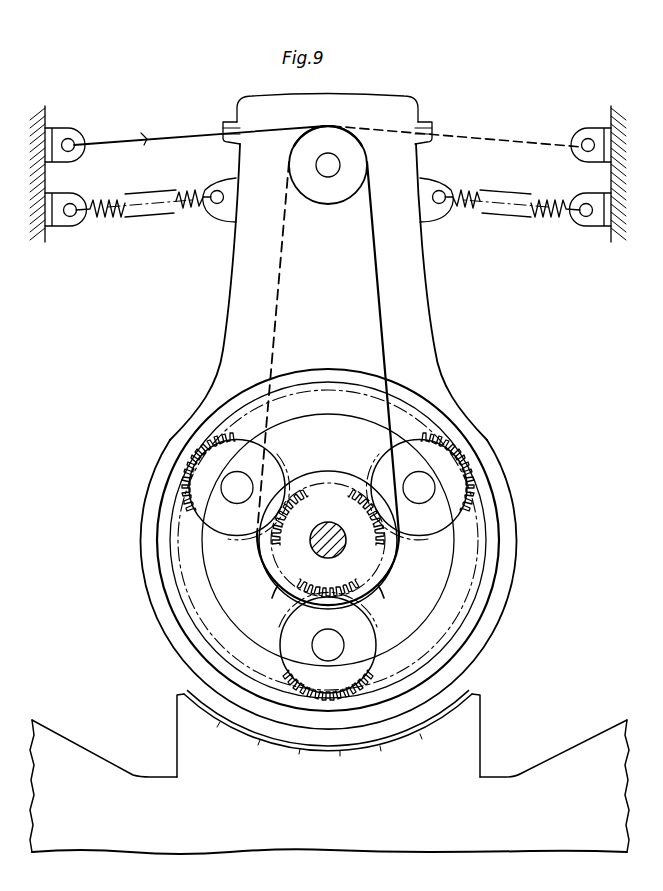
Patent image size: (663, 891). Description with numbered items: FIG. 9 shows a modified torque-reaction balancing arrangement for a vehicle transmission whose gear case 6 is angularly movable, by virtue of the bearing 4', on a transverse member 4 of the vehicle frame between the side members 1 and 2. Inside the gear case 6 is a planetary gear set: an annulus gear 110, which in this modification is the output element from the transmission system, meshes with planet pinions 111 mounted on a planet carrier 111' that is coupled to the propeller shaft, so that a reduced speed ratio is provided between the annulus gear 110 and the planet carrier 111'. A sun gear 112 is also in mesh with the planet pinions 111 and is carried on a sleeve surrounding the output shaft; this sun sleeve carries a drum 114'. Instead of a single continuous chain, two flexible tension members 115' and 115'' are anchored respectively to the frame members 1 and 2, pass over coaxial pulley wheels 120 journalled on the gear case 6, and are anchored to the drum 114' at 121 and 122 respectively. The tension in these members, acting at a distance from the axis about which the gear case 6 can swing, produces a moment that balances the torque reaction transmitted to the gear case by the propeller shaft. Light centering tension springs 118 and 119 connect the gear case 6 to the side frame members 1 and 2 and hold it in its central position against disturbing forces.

The side member 1 is at (613, 177).
The side member 2 is at (46, 177).
The transverse member 4 is at (329, 799).
The bearing 4' is at (328, 734).
The gear case 6 is at (415, 282).
The annulus gear 110 is at (440, 432).
The planet pinions 111 is at (328, 566).
The planet carrier 111' is at (380, 540).
The sun gear 112 is at (363, 550).
The drum 114' is at (301, 540).
The flexible tension member 115' is at (299, 348).
The flexible tension member 115'' is at (373, 383).
The centering tension spring 118 is at (157, 210).
The centering tension spring 119 is at (520, 205).
The coaxial pulley wheels 120 is at (333, 195).
The anchorage 121 is at (387, 593).
The anchorage 122 is at (277, 598).